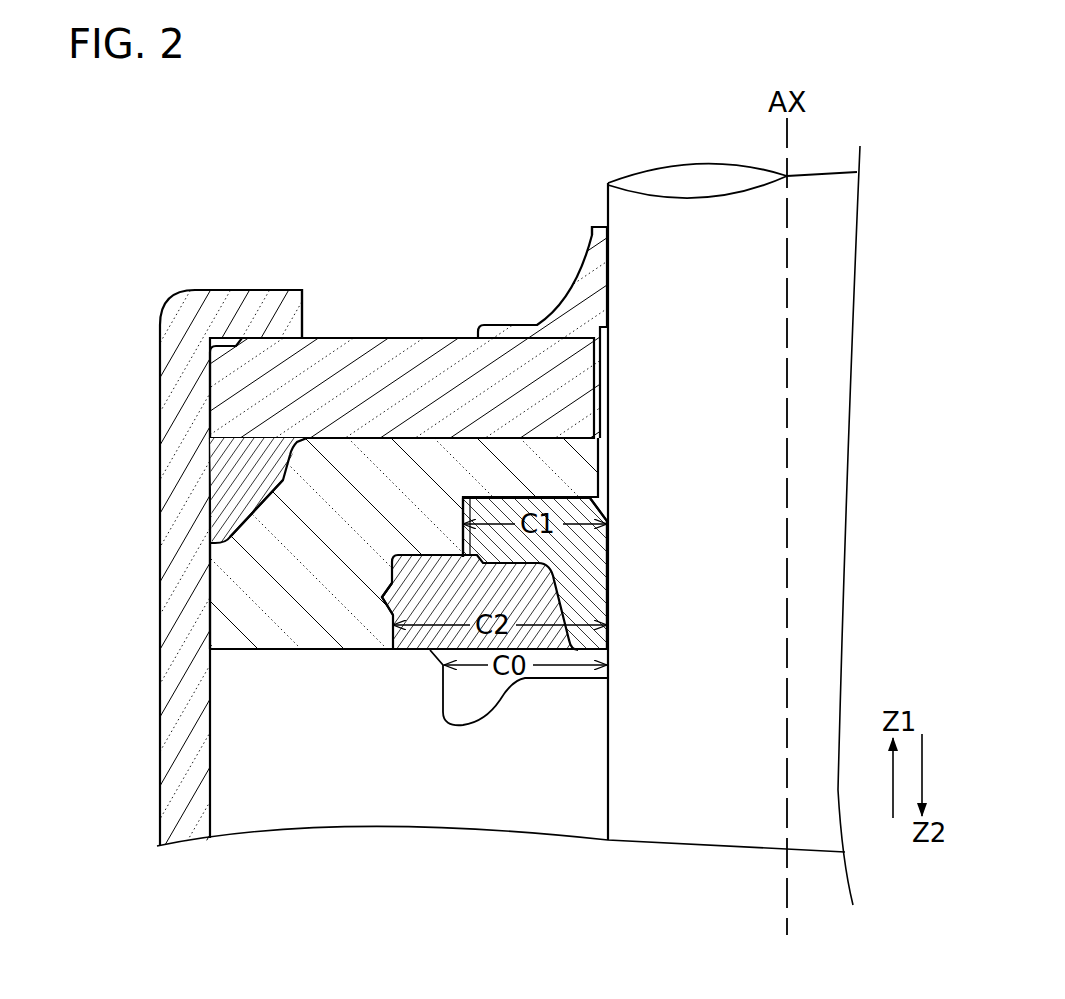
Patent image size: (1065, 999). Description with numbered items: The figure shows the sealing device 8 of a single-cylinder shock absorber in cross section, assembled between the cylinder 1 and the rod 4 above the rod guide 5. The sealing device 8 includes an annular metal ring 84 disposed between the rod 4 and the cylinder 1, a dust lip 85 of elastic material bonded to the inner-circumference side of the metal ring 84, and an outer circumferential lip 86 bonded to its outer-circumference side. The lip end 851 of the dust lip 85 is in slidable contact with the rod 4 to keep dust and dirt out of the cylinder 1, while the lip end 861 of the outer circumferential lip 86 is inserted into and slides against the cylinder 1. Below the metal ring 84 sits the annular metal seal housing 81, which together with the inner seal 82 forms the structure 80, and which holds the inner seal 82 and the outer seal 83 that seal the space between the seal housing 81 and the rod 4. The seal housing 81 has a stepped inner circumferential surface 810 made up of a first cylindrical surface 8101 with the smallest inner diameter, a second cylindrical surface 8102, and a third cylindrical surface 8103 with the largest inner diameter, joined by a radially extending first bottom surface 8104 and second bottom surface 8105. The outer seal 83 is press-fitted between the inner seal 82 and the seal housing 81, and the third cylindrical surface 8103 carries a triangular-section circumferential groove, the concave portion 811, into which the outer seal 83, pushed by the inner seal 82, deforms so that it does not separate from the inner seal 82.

The cylinder 1 is at (257, 289).
The rod 4 is at (612, 210).
The rod guide 5 is at (207, 742).
The sealing device 8 is at (58, 312).
The structure 80 is at (398, 544).
The seal housing 81 is at (207, 540).
The inner seal 82 is at (463, 510).
The outer seal 83 is at (394, 573).
The metal ring 84 is at (207, 395).
The dust lip 85 is at (487, 323).
The lip end 851 is at (592, 233).
The outer circumferential lip 86 is at (207, 465).
The lip end 861 is at (232, 523).
The inner circumferential surface 810 is at (550, 555).
The first cylindrical surface 8101 is at (608, 472).
The second cylindrical surface 8102 is at (607, 547).
The third cylindrical surface 8103 is at (662, 623).
The first bottom surface 8104 is at (600, 500).
The second bottom surface 8105 is at (600, 565).
The concave portion 811 is at (383, 603).